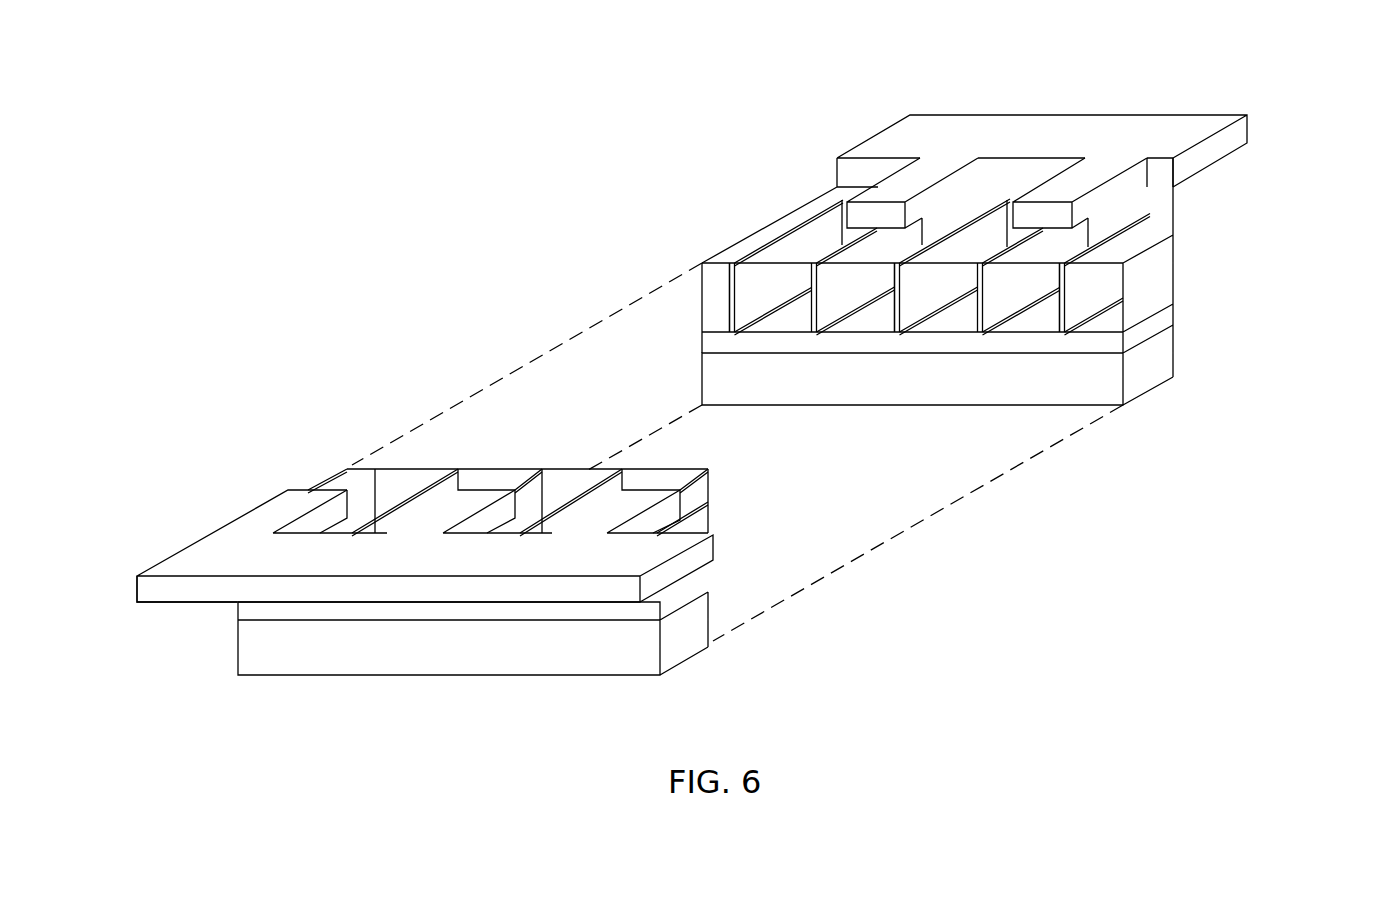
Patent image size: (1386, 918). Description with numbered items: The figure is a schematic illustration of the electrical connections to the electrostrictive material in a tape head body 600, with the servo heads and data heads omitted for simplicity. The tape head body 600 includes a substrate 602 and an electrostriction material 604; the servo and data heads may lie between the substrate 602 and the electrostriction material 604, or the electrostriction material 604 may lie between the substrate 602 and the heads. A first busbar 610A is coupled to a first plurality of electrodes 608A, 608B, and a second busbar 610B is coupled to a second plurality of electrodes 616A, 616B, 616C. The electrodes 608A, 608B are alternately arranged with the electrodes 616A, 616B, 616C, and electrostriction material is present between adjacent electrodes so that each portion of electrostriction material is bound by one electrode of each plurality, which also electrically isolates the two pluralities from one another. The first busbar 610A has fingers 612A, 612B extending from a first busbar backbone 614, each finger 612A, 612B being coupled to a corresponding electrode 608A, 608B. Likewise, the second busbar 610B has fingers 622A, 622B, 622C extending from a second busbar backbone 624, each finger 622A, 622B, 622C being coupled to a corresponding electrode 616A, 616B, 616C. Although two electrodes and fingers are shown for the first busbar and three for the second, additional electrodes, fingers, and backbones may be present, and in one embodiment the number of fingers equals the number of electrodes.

The tape head body 600 is at (275, 100).
The substrate 602 is at (1000, 395).
The electrostriction material 604 is at (952, 300).
The first electrode of the first plurality of electrodes 608A is at (837, 247).
The second electrode of the first plurality of electrodes 608B is at (1017, 237).
The first busbar 610A is at (1063, 147).
The second busbar 610B is at (440, 570).
The first finger of the first busbar 612A is at (907, 182).
The second finger of the first busbar 612B is at (1077, 181).
The first busbar backbone 614 is at (1117, 112).
The first electrode of the second plurality of electrodes 616A is at (365, 468).
The second electrode of the second plurality of electrodes 616B is at (552, 452).
The third electrode of the second plurality of electrodes 616C is at (711, 451).
The first finger of the second busbar 622A is at (273, 520).
The second finger of the second busbar 622B is at (447, 516).
The third finger of the second busbar 622C is at (603, 520).
The second busbar backbone 624 is at (182, 603).